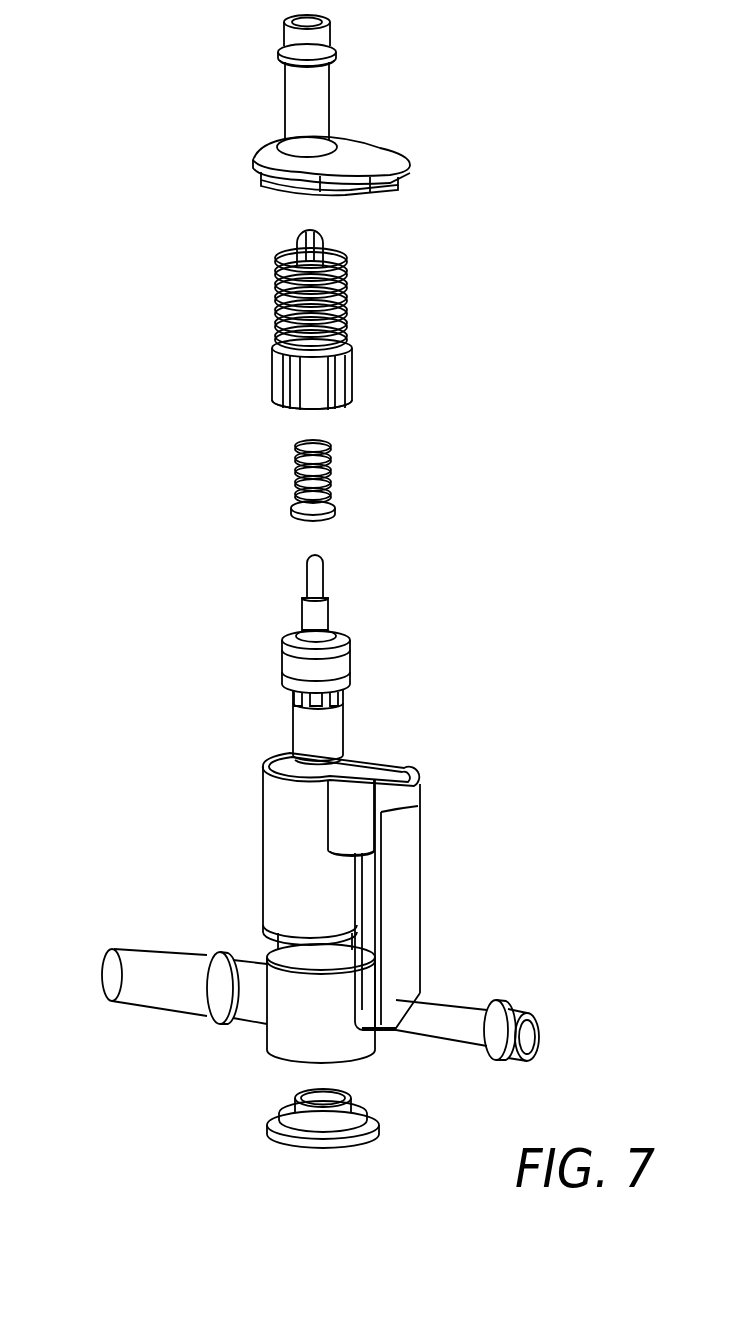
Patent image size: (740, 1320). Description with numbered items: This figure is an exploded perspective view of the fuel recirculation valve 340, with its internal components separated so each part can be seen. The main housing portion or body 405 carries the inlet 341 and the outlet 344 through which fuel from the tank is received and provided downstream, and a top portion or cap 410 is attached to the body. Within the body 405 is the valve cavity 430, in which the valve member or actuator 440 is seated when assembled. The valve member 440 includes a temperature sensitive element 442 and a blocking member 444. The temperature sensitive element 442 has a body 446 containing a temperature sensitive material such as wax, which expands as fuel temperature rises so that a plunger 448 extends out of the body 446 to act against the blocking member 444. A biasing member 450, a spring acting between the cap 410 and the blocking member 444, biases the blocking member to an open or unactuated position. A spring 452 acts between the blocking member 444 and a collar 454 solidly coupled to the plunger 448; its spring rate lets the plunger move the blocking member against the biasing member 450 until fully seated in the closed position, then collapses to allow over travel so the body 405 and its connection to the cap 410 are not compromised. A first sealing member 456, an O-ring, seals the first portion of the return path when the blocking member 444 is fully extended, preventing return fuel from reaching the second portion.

The fuel recirculation valve 340 is at (563, 620).
The inlet 341 is at (545, 1036).
The outlet 344 is at (105, 990).
The body 405 is at (400, 882).
The cap 410 is at (358, 152).
The valve cavity 430 is at (355, 767).
The valve member 440 is at (150, 463).
The temperature sensitive element 442 is at (330, 696).
The blocking member 444 is at (318, 378).
The body 446 is at (317, 730).
The plunger 448 is at (320, 578).
The biasing member 450 is at (335, 258).
The spring 452 is at (322, 446).
The collar 454 is at (332, 510).
The first sealing member 456 is at (335, 282).